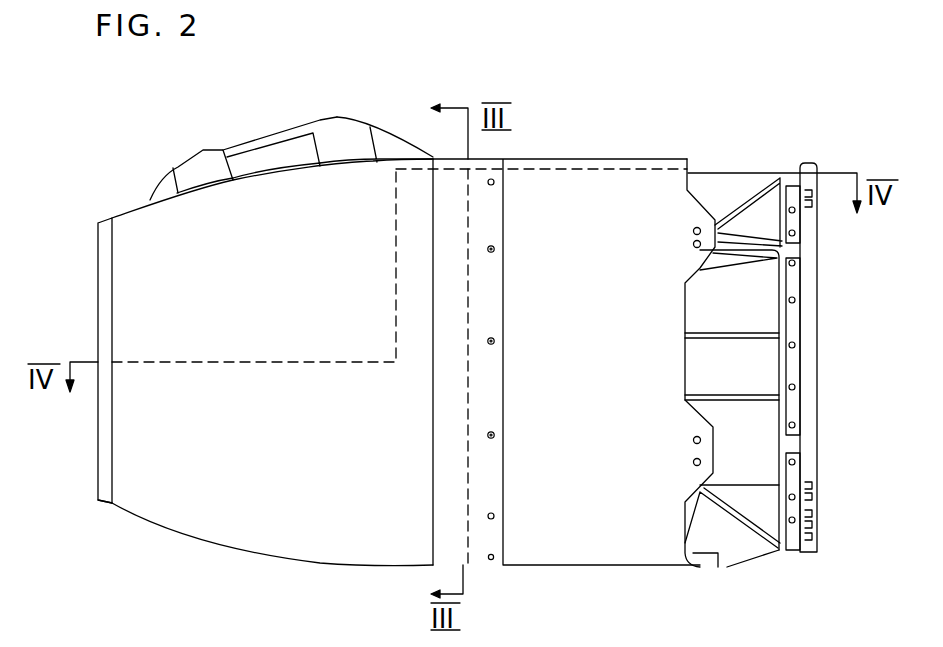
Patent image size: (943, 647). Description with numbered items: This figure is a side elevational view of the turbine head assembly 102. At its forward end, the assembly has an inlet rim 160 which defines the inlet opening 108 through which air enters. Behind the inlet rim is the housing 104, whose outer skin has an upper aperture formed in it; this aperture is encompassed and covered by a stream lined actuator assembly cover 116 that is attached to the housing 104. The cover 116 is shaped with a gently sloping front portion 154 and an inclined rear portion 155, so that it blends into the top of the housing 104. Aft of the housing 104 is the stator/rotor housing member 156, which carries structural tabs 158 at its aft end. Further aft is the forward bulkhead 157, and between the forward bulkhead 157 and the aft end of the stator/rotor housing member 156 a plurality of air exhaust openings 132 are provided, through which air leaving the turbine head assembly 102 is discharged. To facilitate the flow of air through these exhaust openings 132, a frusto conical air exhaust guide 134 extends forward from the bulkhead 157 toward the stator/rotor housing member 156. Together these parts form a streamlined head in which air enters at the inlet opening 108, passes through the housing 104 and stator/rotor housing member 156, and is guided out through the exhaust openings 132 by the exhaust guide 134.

The turbine head assembly 102 is at (290, 556).
The housing 104 is at (316, 479).
The inlet opening 108 is at (98, 250).
The actuator assembly cover 116 is at (310, 127).
The air exhaust openings 132 is at (725, 190).
The frusto conical air exhaust guide 134 is at (760, 185).
The front portion 154 is at (180, 175).
The rear portion 155 is at (385, 148).
The stator/rotor housing member 156 is at (636, 402).
The forward bulkhead 157 is at (806, 355).
The structural tabs 158 is at (690, 200).
The inlet rim 160 is at (104, 496).